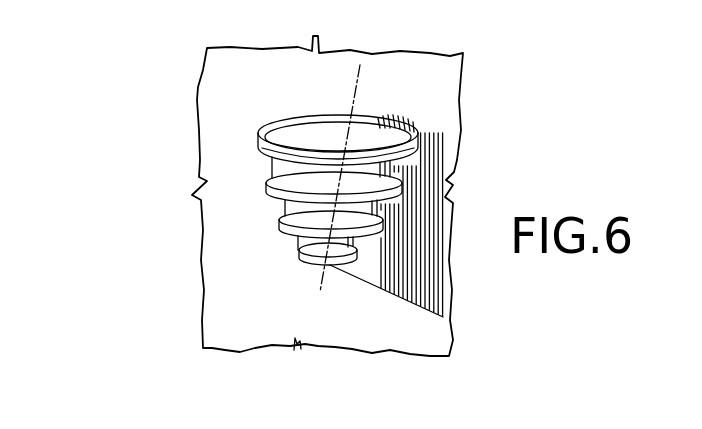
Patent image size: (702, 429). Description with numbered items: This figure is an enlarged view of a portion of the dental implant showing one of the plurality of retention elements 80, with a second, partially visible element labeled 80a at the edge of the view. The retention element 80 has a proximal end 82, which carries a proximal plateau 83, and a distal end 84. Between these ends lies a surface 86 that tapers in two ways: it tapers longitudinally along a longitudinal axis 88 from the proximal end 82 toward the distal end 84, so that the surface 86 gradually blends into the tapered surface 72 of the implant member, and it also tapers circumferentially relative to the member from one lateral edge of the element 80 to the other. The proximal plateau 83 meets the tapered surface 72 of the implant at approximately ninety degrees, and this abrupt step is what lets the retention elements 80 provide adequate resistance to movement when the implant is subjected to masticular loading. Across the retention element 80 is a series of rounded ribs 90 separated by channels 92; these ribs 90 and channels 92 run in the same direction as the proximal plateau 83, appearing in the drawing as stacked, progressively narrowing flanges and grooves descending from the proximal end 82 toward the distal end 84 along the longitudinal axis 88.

The surface 72 is at (452, 331).
The retention element 80 is at (138, 208).
The fastener plug assembly (alternate) 80a is at (701, 427).
The proximal end 82 is at (418, 135).
The proximal plateau 83 is at (377, 104).
The distal end 84 is at (318, 266).
The surface 86 is at (397, 166).
The longitudinal axis 88 is at (362, 83).
The rounded ribs 90 is at (264, 178).
The channels 92 is at (378, 168).